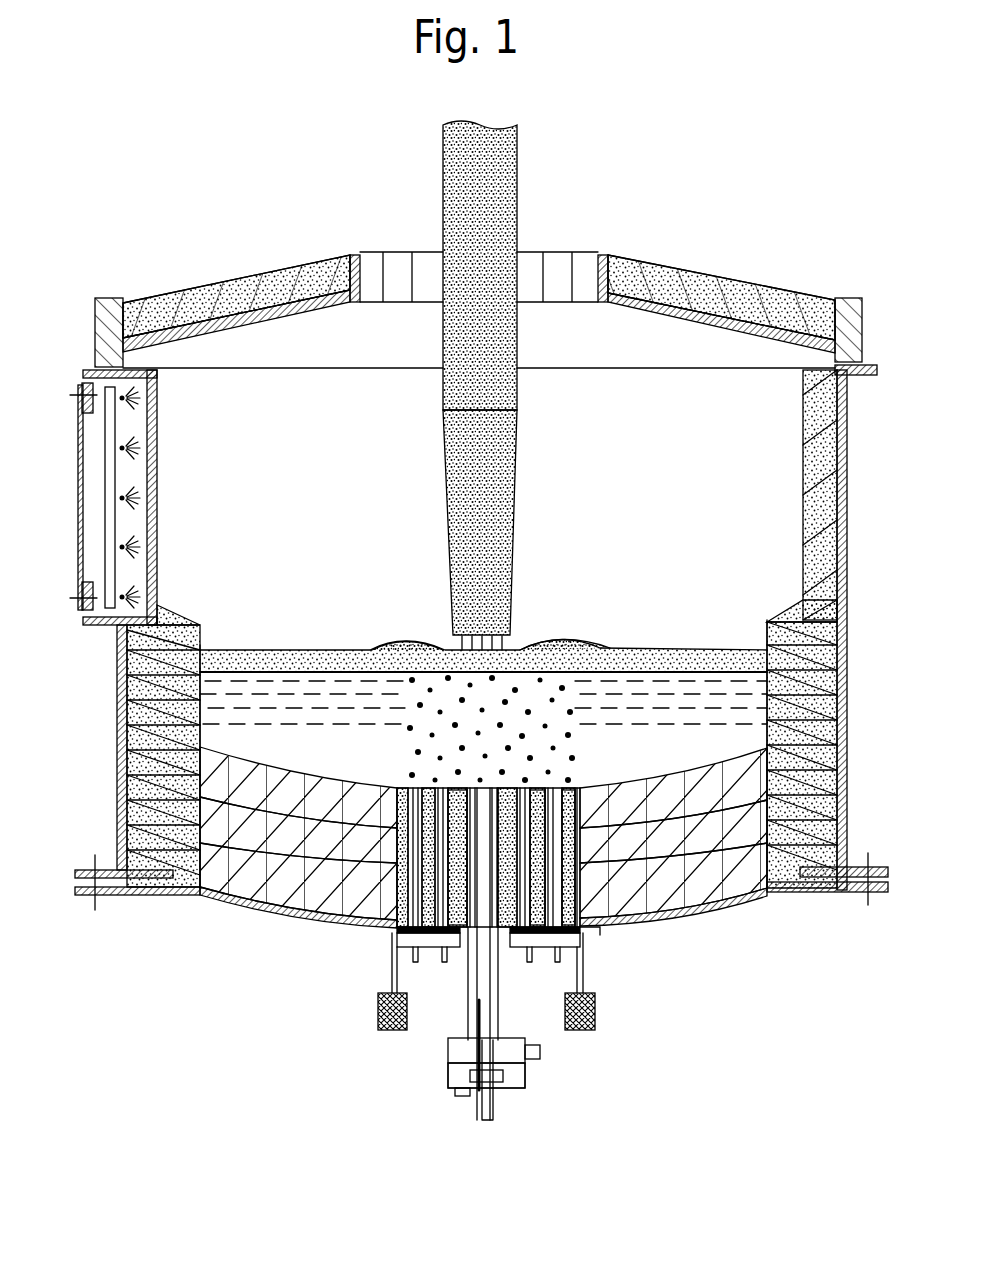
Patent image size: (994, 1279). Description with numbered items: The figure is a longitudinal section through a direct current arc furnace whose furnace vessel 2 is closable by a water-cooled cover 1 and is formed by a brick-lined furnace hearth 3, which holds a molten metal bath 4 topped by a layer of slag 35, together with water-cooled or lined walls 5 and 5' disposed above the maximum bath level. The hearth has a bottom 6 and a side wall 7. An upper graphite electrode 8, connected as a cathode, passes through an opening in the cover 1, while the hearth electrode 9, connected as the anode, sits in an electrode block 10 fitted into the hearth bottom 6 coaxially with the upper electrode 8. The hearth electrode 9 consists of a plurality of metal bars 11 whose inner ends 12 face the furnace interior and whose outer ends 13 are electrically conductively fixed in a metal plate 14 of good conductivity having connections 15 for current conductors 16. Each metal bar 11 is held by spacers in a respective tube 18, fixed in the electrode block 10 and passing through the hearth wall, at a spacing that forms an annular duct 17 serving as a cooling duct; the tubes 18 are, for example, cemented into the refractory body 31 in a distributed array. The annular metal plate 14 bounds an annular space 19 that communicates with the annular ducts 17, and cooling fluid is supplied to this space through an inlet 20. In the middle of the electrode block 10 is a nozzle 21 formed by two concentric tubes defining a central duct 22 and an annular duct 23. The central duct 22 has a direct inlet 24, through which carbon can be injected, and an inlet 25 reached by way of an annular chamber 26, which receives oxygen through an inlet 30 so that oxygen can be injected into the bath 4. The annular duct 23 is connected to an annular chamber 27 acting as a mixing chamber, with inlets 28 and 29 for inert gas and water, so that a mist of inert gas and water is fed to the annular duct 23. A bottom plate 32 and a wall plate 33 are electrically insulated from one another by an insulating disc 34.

The water-cooled cover 1 is at (276, 276).
The furnace vessel 2 is at (852, 591).
The furnace hearth 3 is at (180, 872).
The molten metal bath 4 is at (300, 680).
The water-cooled wall 5 is at (99, 497).
The lined wall 5' is at (842, 495).
The hearth bottom 6 is at (280, 895).
The hearth side wall 7 is at (845, 665).
The upper graphite electrode 8 is at (517, 172).
The hearth electrode 9 is at (410, 786).
The electrode block 10 is at (352, 924).
The metal bars 11 is at (600, 932).
The inner ends 12 is at (560, 788).
The outer ends 13 is at (580, 940).
The metal plate 14 is at (447, 965).
The connections 15 is at (388, 985).
The current conductors 16 is at (378, 1012).
The annular duct 17 is at (575, 810).
The tube 18 is at (580, 795).
The space 19 is at (425, 952).
The inlet 20 is at (395, 940).
The nozzle 21 is at (468, 1010).
The central duct 22 is at (493, 1008).
The annular duct 23 is at (505, 968).
The direct inlet 24 is at (490, 1123).
The inlet 25 is at (500, 1095).
The annular chamber 26 is at (452, 1085).
The annular chamber 27 is at (450, 1058).
The inlet 28 is at (540, 1047).
The inlet 29 is at (535, 1062).
The inlet 30 is at (462, 1095).
The refractory body 31 is at (445, 788).
The bottom plate 32 is at (752, 895).
The wall plate 33 is at (845, 753).
The insulating disc 34 is at (868, 890).
The layer of slag 35 is at (405, 645).